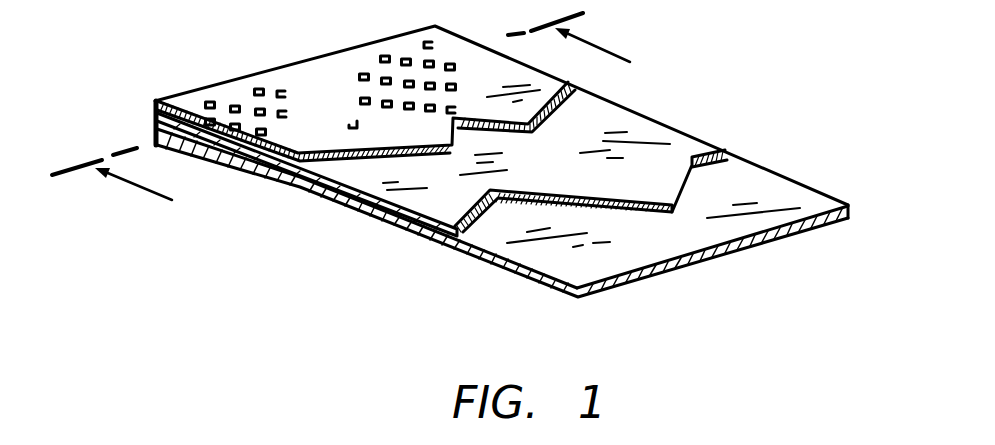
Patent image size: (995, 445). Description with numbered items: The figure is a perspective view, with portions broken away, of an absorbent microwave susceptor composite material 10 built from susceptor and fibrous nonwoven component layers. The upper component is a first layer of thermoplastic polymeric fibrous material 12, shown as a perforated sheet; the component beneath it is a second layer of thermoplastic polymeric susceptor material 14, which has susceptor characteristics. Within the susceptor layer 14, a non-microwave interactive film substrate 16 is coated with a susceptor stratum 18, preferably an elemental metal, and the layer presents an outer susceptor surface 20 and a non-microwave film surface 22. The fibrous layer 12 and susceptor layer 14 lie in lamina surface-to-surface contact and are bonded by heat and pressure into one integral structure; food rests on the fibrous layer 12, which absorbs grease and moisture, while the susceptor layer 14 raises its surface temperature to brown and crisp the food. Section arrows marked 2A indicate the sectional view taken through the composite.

The absorbent microwave susceptor composite material 10 is at (322, 31).
The first layer of thermoplastic polymeric fibrous material 12 is at (218, 97).
The second layer of thermoplastic polymeric susceptor material 14 is at (646, 127).
The film substrate 16 is at (690, 138).
The susceptor stratum 18 is at (800, 183).
The outer susceptor surface 20 is at (523, 279).
The non-microwave film surface 22 is at (430, 200).
The section line 2A- 2A is at (344, 116).